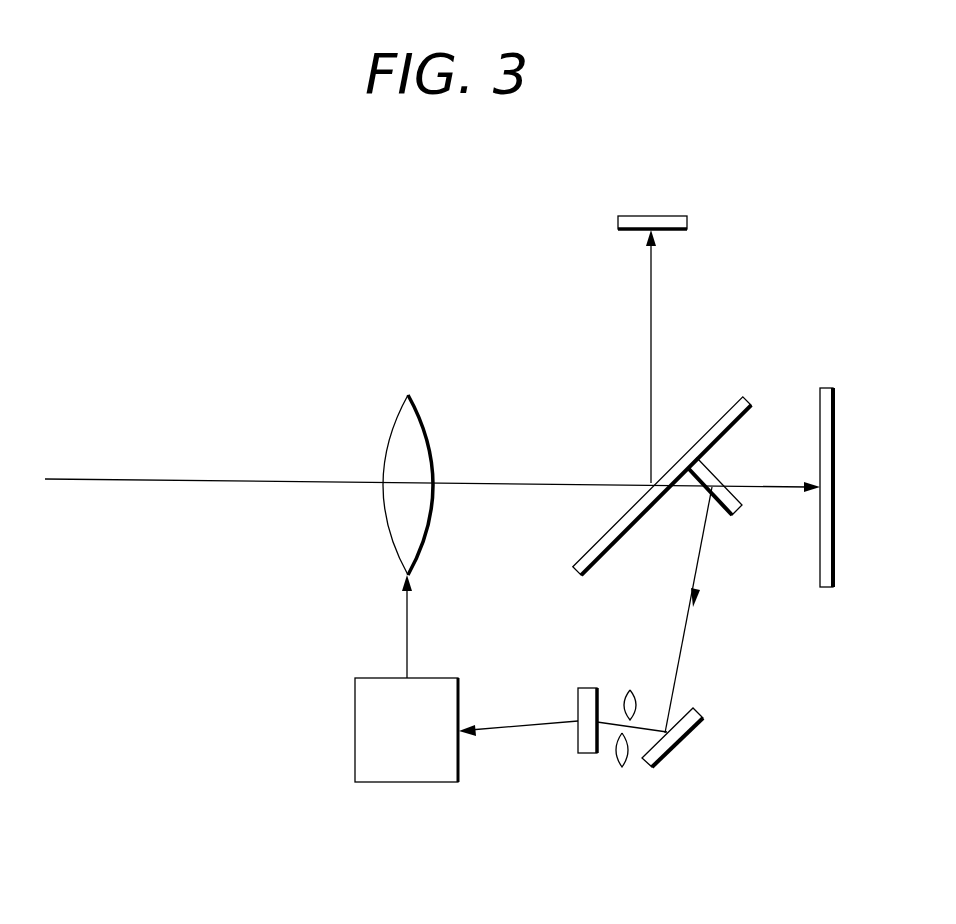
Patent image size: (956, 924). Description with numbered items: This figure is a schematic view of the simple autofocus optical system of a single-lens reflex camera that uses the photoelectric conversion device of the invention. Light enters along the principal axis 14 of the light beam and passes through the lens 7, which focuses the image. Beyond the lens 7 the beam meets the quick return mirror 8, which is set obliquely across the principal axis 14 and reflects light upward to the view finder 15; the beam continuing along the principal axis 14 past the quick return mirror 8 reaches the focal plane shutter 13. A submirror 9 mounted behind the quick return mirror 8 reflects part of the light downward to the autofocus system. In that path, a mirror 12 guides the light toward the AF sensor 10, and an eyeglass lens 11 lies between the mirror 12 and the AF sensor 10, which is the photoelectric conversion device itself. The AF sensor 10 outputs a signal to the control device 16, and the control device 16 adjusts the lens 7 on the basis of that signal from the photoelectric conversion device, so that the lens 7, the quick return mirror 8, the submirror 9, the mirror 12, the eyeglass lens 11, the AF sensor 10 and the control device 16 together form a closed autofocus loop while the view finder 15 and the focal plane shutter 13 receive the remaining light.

The lens 7 is at (428, 428).
The quick return mirror 8 is at (722, 416).
The submirror 9 is at (720, 468).
The AF sensor 10 is at (587, 686).
The eyeglass lens 11 is at (640, 687).
The mirror 12 is at (700, 710).
The focal plane shutter 13 is at (828, 386).
The principal axis 14 is at (253, 480).
The view finder 15 is at (688, 222).
The control device 16 is at (433, 678).